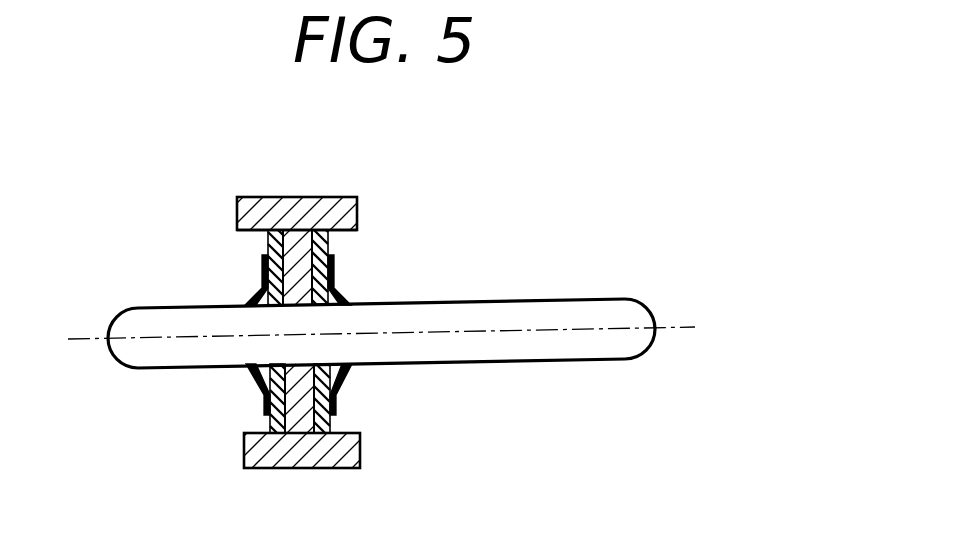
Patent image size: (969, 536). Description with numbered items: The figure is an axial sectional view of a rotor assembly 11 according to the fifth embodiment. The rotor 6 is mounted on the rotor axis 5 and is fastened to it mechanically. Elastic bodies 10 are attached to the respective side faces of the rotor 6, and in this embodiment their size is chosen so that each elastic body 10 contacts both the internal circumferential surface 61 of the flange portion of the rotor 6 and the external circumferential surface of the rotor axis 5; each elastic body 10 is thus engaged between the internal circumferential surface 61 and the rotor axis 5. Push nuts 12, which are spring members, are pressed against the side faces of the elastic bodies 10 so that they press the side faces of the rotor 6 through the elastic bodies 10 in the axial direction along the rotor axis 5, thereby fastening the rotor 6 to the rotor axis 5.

The rotor axis 5 is at (593, 300).
The rotor 6 is at (348, 197).
The internal circumferential surface of flange portion 61 is at (247, 235).
The elastic body 10 is at (331, 242).
The rotor assembly 11 is at (228, 170).
The push nut 12 is at (264, 272).